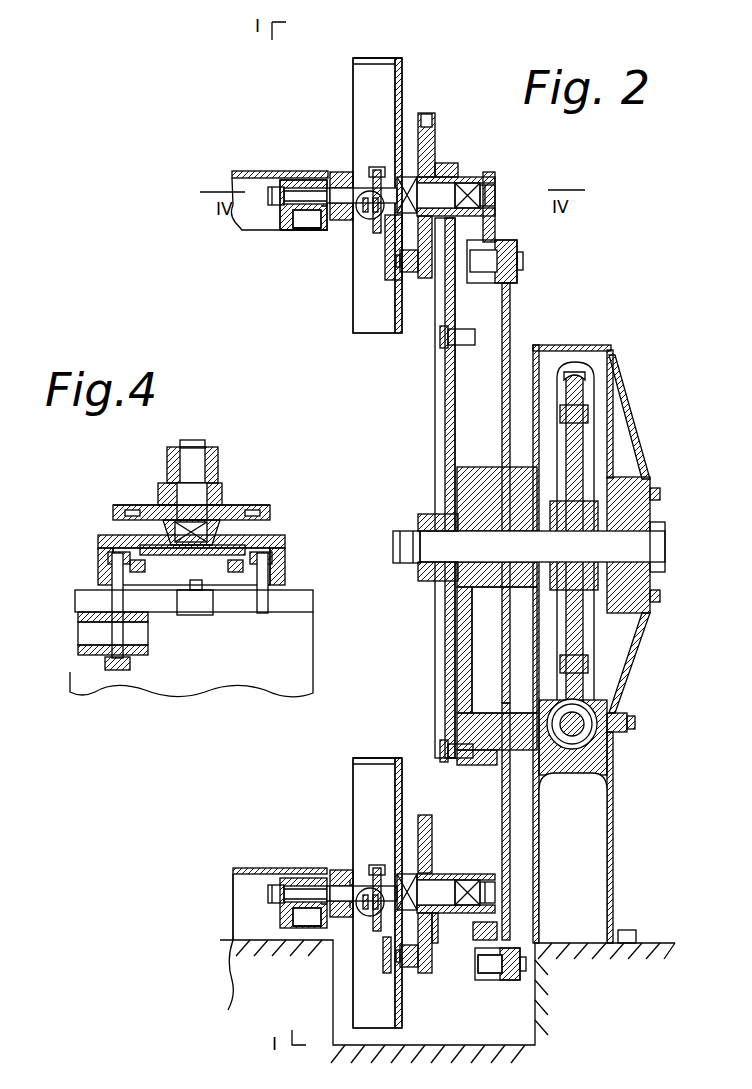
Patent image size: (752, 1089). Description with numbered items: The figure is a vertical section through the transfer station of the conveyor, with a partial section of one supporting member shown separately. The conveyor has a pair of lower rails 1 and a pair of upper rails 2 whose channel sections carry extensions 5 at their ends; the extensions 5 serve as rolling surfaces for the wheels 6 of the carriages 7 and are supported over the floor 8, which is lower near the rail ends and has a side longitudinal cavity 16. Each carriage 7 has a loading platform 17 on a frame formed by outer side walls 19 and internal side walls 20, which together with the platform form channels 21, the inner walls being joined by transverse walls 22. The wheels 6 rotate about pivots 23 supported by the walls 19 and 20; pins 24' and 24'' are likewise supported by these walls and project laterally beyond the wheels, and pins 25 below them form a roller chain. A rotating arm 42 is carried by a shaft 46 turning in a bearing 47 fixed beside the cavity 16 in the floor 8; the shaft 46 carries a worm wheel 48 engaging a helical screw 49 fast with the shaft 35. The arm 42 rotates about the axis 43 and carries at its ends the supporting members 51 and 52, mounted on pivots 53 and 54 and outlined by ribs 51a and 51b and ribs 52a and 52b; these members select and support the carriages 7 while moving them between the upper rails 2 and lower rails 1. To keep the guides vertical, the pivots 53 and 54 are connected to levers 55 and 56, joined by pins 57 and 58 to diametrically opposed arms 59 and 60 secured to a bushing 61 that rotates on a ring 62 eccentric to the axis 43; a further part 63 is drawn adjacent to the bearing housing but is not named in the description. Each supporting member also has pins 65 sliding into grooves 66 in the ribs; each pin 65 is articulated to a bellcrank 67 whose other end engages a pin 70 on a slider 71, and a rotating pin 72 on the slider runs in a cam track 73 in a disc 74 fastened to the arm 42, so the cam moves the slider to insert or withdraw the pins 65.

In FIG. 2, the lower rails 1 is at (352, 876).
In FIG. 2, the upper rails 2 is at (325, 170).
In FIG. 2, the extensions 5 is at (345, 222).
In FIG. 4, the extensions 5 is at (314, 604).
In FIG. 2, the wheels 6 is at (344, 182).
In FIG. 4, the wheels 6 is at (196, 614).
In FIG. 4, the carriages 7 is at (302, 628).
In FIG. 2, the floor 8 is at (236, 936).
In FIG. 2, the side longitudinal cavity 16 is at (536, 1000).
In FIG. 2, the loading platform 17 is at (262, 171).
In FIG. 2, the side walls 19 is at (326, 230).
In FIG. 4, the side walls 19 is at (78, 622).
In FIG. 2, the internal side walls 20 is at (292, 231).
In FIG. 4, the internal side walls 20 is at (78, 656).
In FIG. 2, the channels 21 is at (300, 180).
In FIG. 4, the channels 21 is at (78, 640).
In FIG. 2, the transverse walls 22 is at (240, 900).
In FIG. 2, the pivots 23 is at (286, 200).
In FIG. 4, the pin 24' is at (96, 611).
In FIG. 4, the pin 24'' is at (302, 583).
In FIG. 2, the pins 25 is at (310, 231).
In FIG. 2, the shaft 35 is at (567, 742).
In FIG. 2, the rotating arms 42 is at (440, 376).
In FIG. 2, the axis 43 is at (432, 552).
In FIG. 2, the shaft 46 is at (510, 556).
In FIG. 2, the bearing 47 is at (614, 762).
In FIG. 2, the worm wheel 48 is at (590, 383).
In FIG. 2, the helical screw 49 is at (580, 748).
In FIG. 2, the supporting member 51 is at (400, 76).
In FIG. 2, the rib 51a is at (358, 86).
In FIG. 2, the rib 51b is at (365, 58).
In FIG. 2, the supporting member 52 is at (400, 782).
In FIG. 2, the rib 52a is at (361, 790).
In FIG. 2, the rib 52b is at (363, 758).
In FIG. 2, the pivot 53 is at (446, 190).
In FIG. 4, the pivot 53 is at (184, 496).
In FIG. 2, the pivot 54 is at (470, 932).
In FIG. 2, the lever 55 is at (496, 222).
In FIG. 4, the lever 55 is at (212, 456).
In FIG. 2, the lever 56 is at (487, 982).
In FIG. 2, the pin 57 is at (496, 272).
In FIG. 2, the pin 58 is at (490, 980).
In FIG. 2, the arm 59 is at (510, 316).
In FIG. 2, the arm 60 is at (502, 818).
In FIG. 2, the bushing 61 is at (490, 758).
In FIG. 2, the ring 62 is at (485, 717).
In FIG. 2, the housing block 63 is at (498, 632).
In FIG. 4, the pins 65 is at (110, 562).
In FIG. 4, the grooves 66 is at (143, 578).
In FIG. 2, the square lever or bellcrank 67 is at (376, 167).
In FIG. 2, the pin 70 is at (381, 165).
In FIG. 2, the slider 71 is at (388, 280).
In FIG. 4, the slider 71 is at (190, 556).
In FIG. 2, the rotating pin 72 is at (425, 280).
In FIG. 2, the cam track 73 is at (428, 134).
In FIG. 4, the cam track 73 is at (258, 506).
In FIG. 2, the disc 74 is at (430, 118).
In FIG. 4, the disc 74 is at (228, 506).